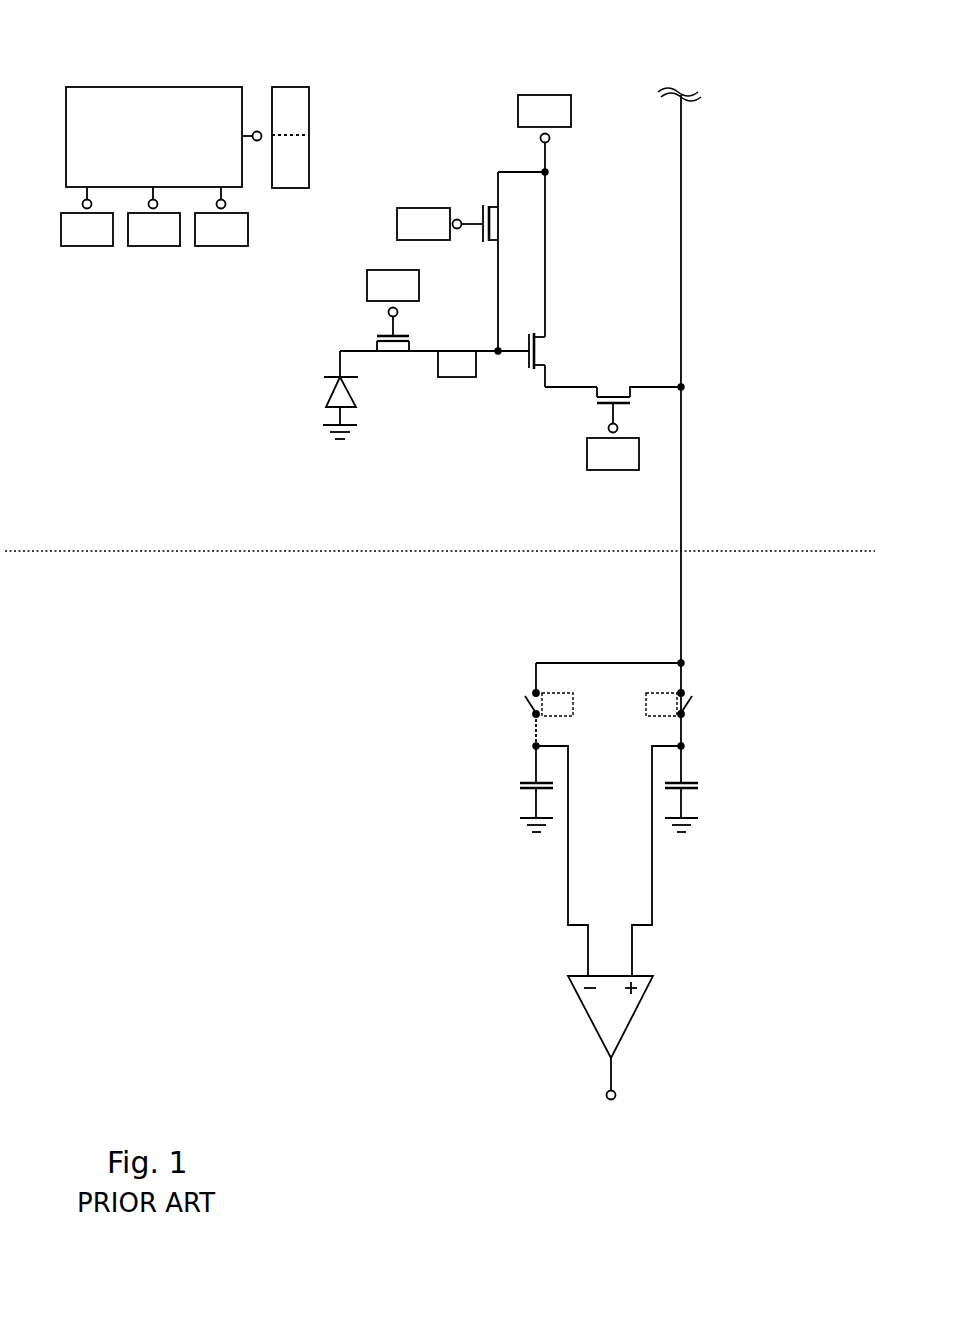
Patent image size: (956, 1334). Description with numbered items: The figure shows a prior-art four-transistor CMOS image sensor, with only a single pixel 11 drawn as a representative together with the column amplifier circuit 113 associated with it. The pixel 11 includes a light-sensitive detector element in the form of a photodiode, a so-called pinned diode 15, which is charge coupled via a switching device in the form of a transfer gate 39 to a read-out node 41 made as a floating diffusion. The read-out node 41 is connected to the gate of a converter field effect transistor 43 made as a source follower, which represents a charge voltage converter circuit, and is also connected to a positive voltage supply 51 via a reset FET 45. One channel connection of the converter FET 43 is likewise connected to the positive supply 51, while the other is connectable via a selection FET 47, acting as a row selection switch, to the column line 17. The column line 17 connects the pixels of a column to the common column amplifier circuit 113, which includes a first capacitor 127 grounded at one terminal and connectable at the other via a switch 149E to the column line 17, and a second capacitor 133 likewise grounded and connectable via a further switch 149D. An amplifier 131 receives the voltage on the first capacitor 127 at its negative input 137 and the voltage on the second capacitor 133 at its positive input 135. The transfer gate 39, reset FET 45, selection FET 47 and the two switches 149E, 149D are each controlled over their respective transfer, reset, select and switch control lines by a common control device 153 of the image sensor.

The pixel 11 is at (216, 345).
The pinned diode 15 is at (322, 392).
The column line 17 is at (684, 222).
The transfer gate 39 is at (394, 346).
The read-out node 41 is at (457, 344).
The converter field effect transistor 43 is at (546, 349).
The reset FET 45 is at (484, 200).
The selection FET 47 is at (614, 385).
The positive voltage supply 51 is at (545, 92).
The column amplifier circuit 113 is at (252, 860).
The first capacitor 127 is at (519, 785).
The amplifier 131 is at (641, 1012).
The second capacitor 133 is at (706, 785).
The positive input 135 is at (638, 970).
The negative input 137 is at (585, 970).
The further switch 149D is at (701, 704).
The switch 149E is at (519, 702).
The common control device 153 is at (160, 86).